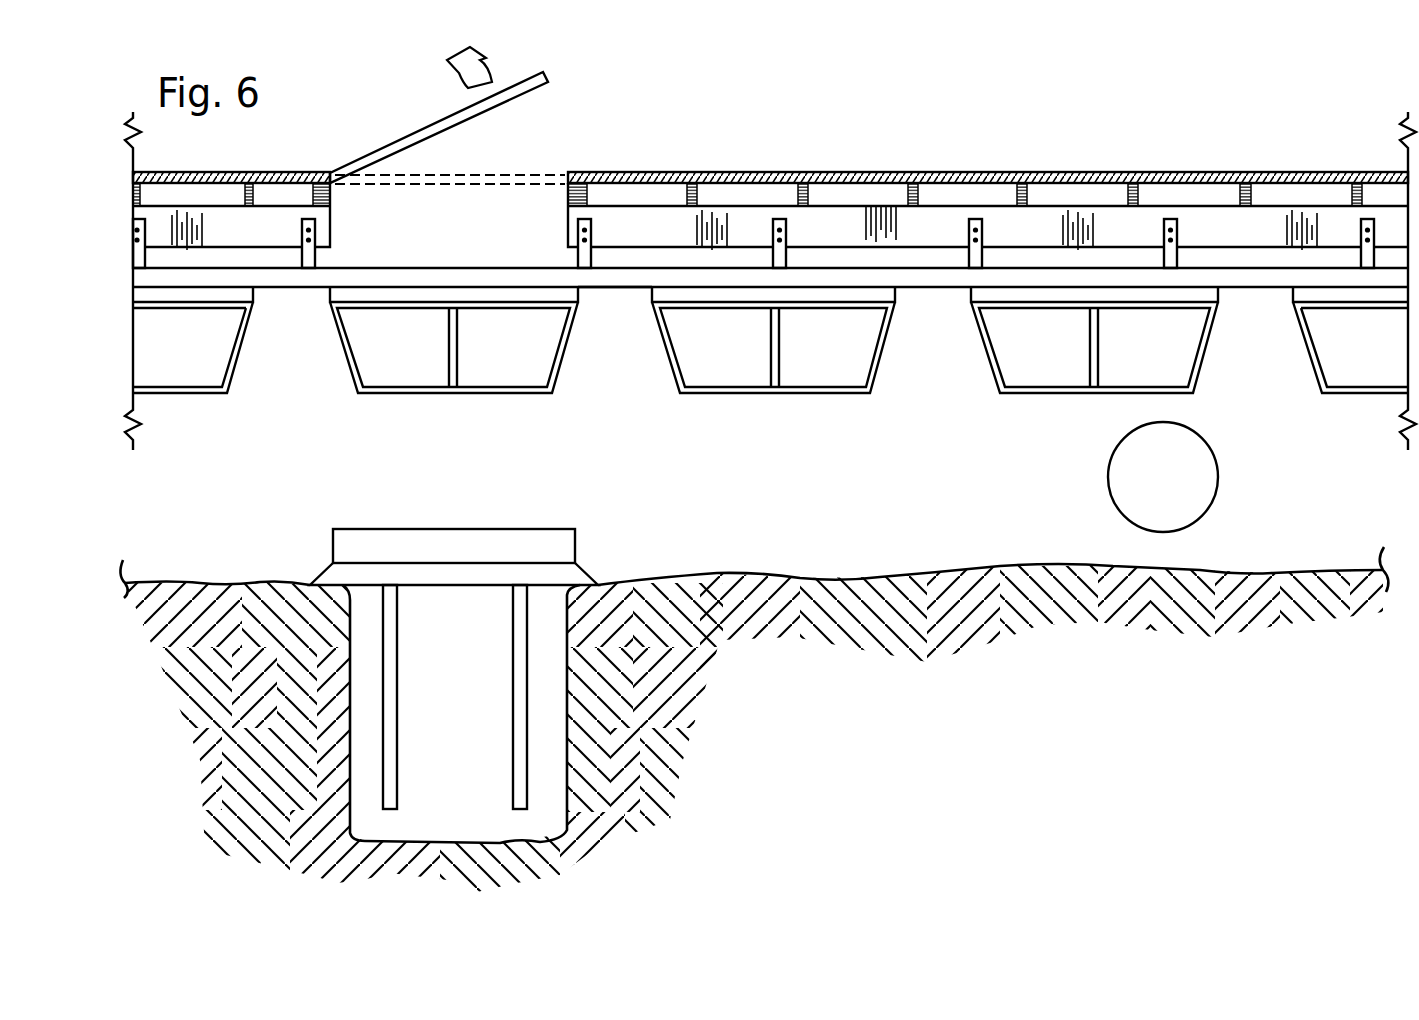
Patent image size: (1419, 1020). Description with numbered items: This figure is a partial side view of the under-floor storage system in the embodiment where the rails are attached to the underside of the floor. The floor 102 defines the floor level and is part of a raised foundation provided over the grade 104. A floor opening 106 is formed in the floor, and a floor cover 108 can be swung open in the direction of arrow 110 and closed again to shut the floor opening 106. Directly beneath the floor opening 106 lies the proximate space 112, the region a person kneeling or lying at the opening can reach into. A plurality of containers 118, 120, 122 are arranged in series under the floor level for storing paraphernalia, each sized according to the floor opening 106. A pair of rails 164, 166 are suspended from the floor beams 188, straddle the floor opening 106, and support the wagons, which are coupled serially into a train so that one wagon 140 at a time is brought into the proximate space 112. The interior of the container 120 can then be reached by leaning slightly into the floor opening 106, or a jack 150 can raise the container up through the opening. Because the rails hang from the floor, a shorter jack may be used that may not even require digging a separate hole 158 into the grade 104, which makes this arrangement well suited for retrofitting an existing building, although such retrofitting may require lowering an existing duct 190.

The floor 102 is at (986, 168).
The grade 104 is at (1045, 588).
The floor opening 106 is at (497, 195).
The floor cover 108 is at (540, 85).
The arrow 110 is at (465, 82).
The proximate space 112 is at (310, 497).
The container 118 is at (818, 370).
The container 120 is at (385, 325).
The container 122 is at (188, 372).
The wagon 140 is at (227, 393).
The jack 150 is at (592, 540).
The hole 158 is at (455, 712).
The rail 164 is at (586, 280).
The rail 166 is at (618, 289).
The floor beams 188 is at (845, 213).
The duct 190 is at (1210, 507).